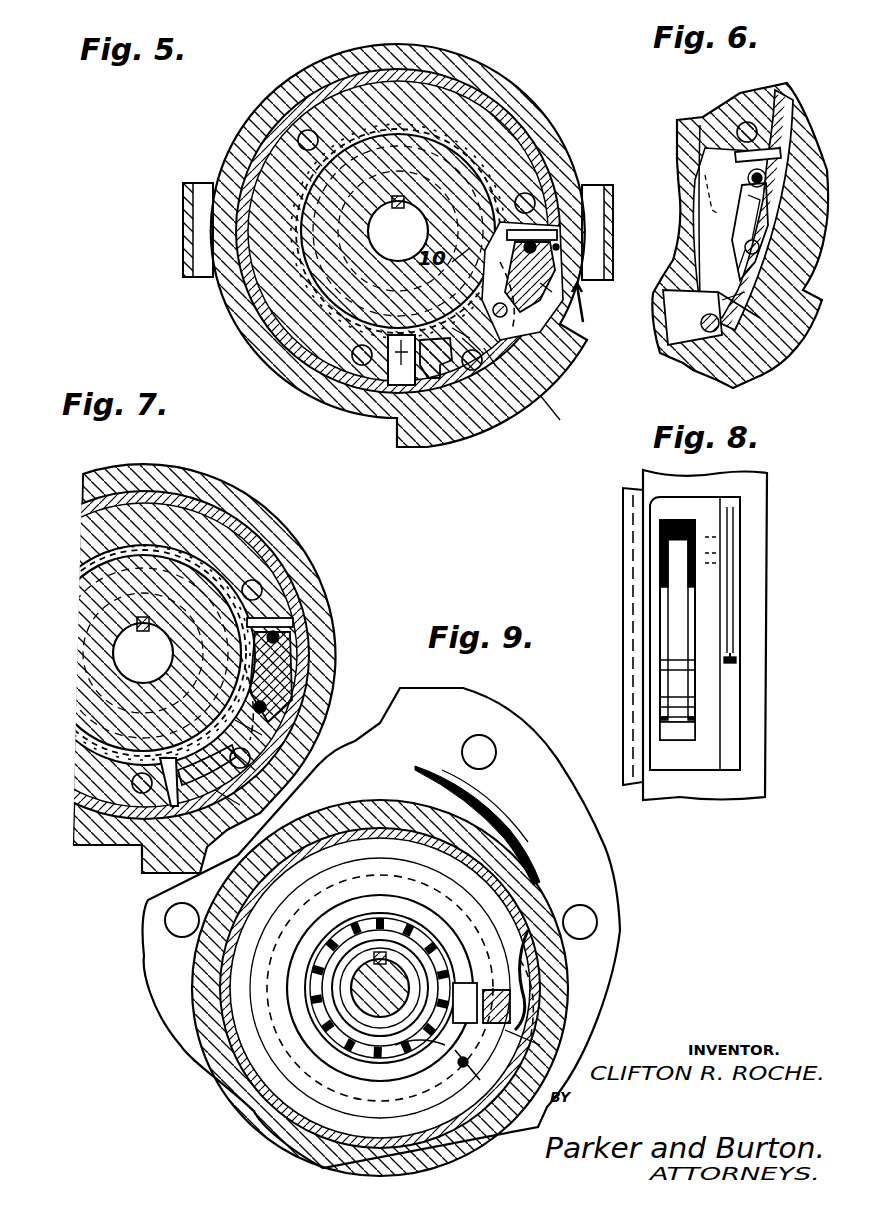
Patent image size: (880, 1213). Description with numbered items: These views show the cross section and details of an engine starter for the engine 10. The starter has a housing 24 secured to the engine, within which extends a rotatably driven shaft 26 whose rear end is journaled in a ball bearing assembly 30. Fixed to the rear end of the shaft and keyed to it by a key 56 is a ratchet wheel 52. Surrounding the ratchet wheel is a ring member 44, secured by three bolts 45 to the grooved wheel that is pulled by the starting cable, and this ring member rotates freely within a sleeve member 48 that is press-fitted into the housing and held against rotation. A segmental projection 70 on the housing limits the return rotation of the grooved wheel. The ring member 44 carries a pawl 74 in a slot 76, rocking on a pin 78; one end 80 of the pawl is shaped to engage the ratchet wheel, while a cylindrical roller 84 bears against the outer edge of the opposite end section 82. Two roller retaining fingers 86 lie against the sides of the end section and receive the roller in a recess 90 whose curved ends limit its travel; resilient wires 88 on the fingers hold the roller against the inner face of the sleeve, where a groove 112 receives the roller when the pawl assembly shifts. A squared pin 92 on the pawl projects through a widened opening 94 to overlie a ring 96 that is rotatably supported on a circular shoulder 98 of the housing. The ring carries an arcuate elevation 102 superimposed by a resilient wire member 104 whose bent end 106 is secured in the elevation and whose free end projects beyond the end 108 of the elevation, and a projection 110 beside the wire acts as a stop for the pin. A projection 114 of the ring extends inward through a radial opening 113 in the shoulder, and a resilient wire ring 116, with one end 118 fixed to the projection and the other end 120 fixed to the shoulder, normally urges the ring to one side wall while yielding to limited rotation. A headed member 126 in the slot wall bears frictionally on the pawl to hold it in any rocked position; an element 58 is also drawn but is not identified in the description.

In FIG. 5, the engine 10 is at (596, 306).
In FIG. 5, the housing 24 is at (255, 197).
In FIG. 5, the rotatably driven shaft 26 is at (328, 323).
In FIG. 7, the rotatably driven shaft 26 is at (227, 580).
In FIG. 9, the rotatably driven shaft 26 is at (365, 975).
In FIG. 9, the ball bearing assembly 30 is at (319, 1005).
In FIG. 5, the ring member 44 is at (500, 112).
In FIG. 6, the ring member 44 is at (737, 118).
In FIG. 5, the bolts 45 is at (362, 365).
In FIG. 7, the bolts 45 is at (262, 585).
In FIG. 5, the sleeve member 48 is at (483, 110).
In FIG. 5, the ratchet wheel 52 is at (300, 262).
In FIG. 7, the ratchet wheel 52 is at (183, 557).
In FIG. 5, the key 56 is at (400, 200).
In FIG. 5, the boss 58 is at (183, 250).
In FIG. 5, the segmental projection 70 is at (540, 400).
In FIG. 5, the pawl 74 is at (556, 268).
In FIG. 6, the pawl 74 is at (695, 234).
In FIG. 7, the pawl 74 is at (292, 655).
In FIG. 5, the slot 76 is at (395, 372).
In FIG. 7, the slot 76 is at (168, 812).
In FIG. 8, the slot 76 is at (683, 735).
In FIG. 5, the pin 78 is at (548, 292).
In FIG. 6, the pin 78 is at (674, 322).
In FIG. 7, the pin 78 is at (262, 707).
In FIG. 5, the ratchet engaging end of the pawl 80 is at (532, 243).
In FIG. 6, the ratchet engaging end of the pawl 80 is at (748, 180).
In FIG. 5, the end section of the pawl 82 is at (540, 300).
In FIG. 6, the end section of the pawl 82 is at (705, 320).
In FIG. 8, the end section of the pawl 82 is at (675, 678).
In FIG. 5, the cylindrical roller 84 is at (456, 340).
In FIG. 6, the cylindrical roller 84 is at (770, 345).
In FIG. 7, the cylindrical roller 84 is at (257, 770).
In FIG. 8, the cylindrical roller 84 is at (690, 718).
In FIG. 5, the roller retaining fingers 86 is at (472, 350).
In FIG. 7, the roller retaining fingers 86 is at (260, 737).
In FIG. 8, the roller retaining fingers 86 is at (690, 637).
In FIG. 5, the resilient wire 88 is at (557, 236).
In FIG. 6, the resilient wire 88 is at (704, 180).
In FIG. 7, the resilient wire 88 is at (293, 622).
In FIG. 8, the resilient wire 88 is at (700, 520).
In FIG. 5, the recess 90 is at (425, 362).
In FIG. 7, the recess 90 is at (220, 782).
In FIG. 8, the recess 90 is at (690, 702).
In FIG. 8, the squared pin 92 is at (740, 552).
In FIG. 9, the squared pin 92 is at (373, 840).
In FIG. 8, the widened opening 94 is at (745, 520).
In FIG. 8, the ring 96 is at (740, 745).
In FIG. 9, the ring 96 is at (327, 887).
In FIG. 9, the circular shoulder 98 is at (430, 917).
In FIG. 8, the arcuate elevation 102 is at (738, 660).
In FIG. 9, the arcuate elevation 102 is at (567, 1037).
In FIG. 5, the resilient wire member 104 is at (572, 170).
In FIG. 6, the resilient wire member 104 is at (778, 328).
In FIG. 7, the resilient wire member 104 is at (330, 672).
In FIG. 8, the resilient wire member 104 is at (735, 610).
In FIG. 9, the resilient wire member 104 is at (545, 945).
In FIG. 9, the bent end of the wire member 106 is at (471, 1087).
In FIG. 9, the end of the elevation 108 is at (525, 900).
In FIG. 8, the projection 110 is at (735, 583).
In FIG. 9, the projection 110 is at (570, 1002).
In FIG. 5, the groove 112 is at (490, 362).
In FIG. 6, the groove 112 is at (700, 355).
In FIG. 7, the groove 112 is at (230, 805).
In FIG. 6, the radial opening 113 is at (676, 197).
In FIG. 9, the radial opening 113 is at (560, 1048).
In FIG. 9, the projection 114 is at (473, 937).
In FIG. 7, the resilient wire ring 116 is at (100, 778).
In FIG. 9, the resilient wire ring 116 is at (362, 1054).
In FIG. 9, the end of the wire ring 118 is at (392, 1038).
In FIG. 9, the other end of the wire ring 120 is at (449, 1046).
In FIG. 5, the headed member 126 is at (560, 247).
In FIG. 6, the headed member 126 is at (696, 204).
In FIG. 7, the headed member 126 is at (280, 637).